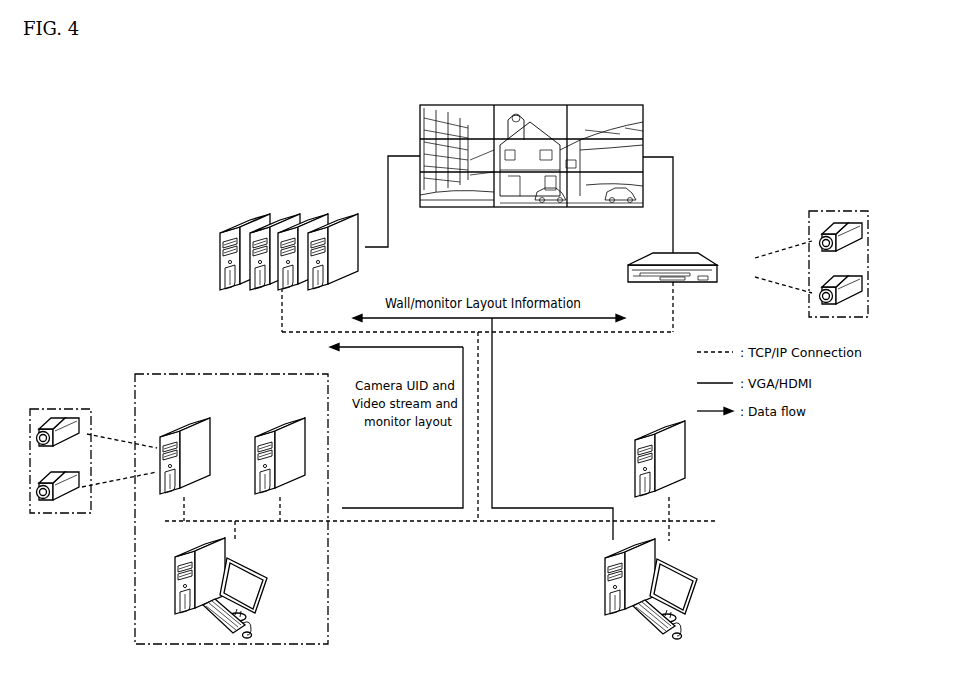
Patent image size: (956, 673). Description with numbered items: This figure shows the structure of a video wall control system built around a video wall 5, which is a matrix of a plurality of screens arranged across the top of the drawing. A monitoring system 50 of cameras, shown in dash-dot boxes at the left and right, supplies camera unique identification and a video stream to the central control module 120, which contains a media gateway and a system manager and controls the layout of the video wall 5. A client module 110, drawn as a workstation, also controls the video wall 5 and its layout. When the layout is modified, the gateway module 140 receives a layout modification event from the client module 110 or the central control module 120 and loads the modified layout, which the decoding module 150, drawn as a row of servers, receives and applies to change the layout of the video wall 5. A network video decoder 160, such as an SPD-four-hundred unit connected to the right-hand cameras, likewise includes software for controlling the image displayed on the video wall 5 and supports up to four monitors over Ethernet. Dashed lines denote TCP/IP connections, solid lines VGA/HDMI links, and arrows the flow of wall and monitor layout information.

The video wall 5 is at (620, 105).
The monitoring system 50 is at (841, 210).
The client module 110 is at (697, 590).
The central control module 120 is at (232, 373).
The gateway module 140 is at (684, 453).
The decoding module 150 is at (291, 220).
The network video decoder 160 is at (690, 253).